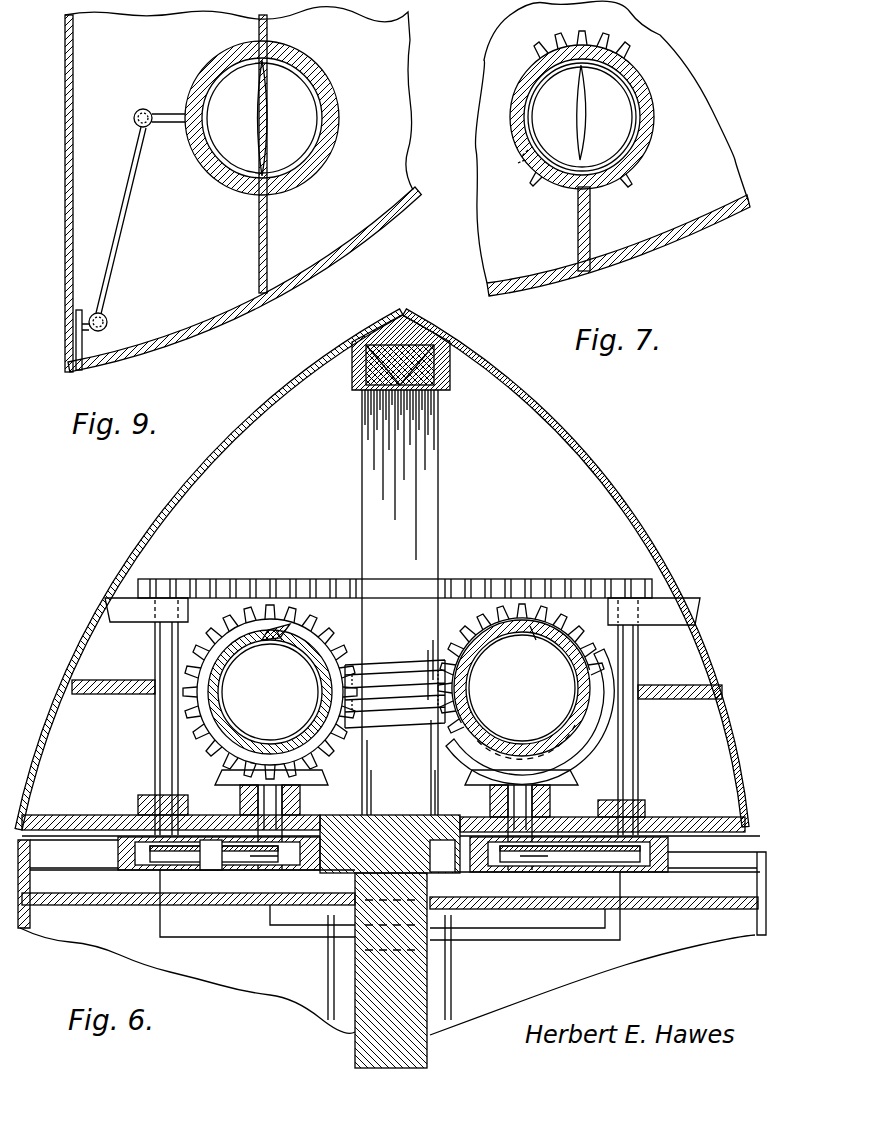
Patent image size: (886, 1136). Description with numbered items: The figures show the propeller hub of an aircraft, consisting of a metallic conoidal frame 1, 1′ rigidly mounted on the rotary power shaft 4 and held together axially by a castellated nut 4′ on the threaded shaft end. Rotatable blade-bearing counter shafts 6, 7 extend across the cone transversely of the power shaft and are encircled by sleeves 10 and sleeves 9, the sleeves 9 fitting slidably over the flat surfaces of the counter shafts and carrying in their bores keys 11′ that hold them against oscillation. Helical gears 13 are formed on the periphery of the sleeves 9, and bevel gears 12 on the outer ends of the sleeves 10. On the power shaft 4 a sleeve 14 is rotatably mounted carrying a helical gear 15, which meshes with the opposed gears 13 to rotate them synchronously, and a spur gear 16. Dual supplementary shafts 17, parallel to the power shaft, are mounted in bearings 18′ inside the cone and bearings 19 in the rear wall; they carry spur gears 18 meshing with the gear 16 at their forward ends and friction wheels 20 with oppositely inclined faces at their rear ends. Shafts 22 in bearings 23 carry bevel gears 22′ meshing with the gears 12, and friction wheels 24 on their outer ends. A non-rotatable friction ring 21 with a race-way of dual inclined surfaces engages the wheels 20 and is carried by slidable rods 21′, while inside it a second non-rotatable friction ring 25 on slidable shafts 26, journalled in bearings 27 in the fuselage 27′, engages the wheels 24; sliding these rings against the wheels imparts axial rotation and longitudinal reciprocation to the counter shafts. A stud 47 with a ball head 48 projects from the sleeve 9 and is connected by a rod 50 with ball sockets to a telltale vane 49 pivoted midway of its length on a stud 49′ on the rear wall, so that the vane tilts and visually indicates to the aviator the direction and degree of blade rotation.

In FIG. 9, the propeller-supporting frame section 1 is at (73, 200).
In FIG. 7, the propeller-supporting frame section 1 is at (552, 266).
In FIG. 6, the propeller-supporting frame section 1 is at (698, 832).
In FIG. 9, the front frame section 1′ is at (338, 250).
In FIG. 7, the front frame section 1′ is at (668, 250).
In FIG. 6, the front frame section 1′ is at (449, 366).
In FIG. 6, the power shaft 4 is at (380, 392).
In FIG. 6, the nut 4′ is at (366, 342).
In FIG. 9, the blade-bearing counter shaft 6 is at (208, 119).
In FIG. 7, the blade-bearing counter shaft 6 is at (635, 119).
In FIG. 6, the blade-bearing counter shaft 6 is at (470, 700).
In FIG. 6, the blade-bearing counter shaft 7 is at (216, 688).
In FIG. 9, the sleeve 9 is at (337, 121).
In FIG. 7, the sleeve 9 is at (655, 127).
In FIG. 6, the sleeve 9 is at (522, 688).
In FIG. 6, the sleeve 10 is at (250, 648).
In FIG. 6, the key 11′ is at (279, 644).
In FIG. 6, the bevel gear 12 is at (312, 648).
In FIG. 7, the helical gear 13 is at (536, 47).
In FIG. 6, the helical gear 13 is at (562, 638).
In FIG. 6, the sleeve 14 is at (397, 635).
In FIG. 6, the helical gear 15 is at (395, 694).
In FIG. 6, the spur gear 16 is at (330, 580).
In FIG. 6, the supplementary shaft 17 is at (152, 724).
In FIG. 6, the spur gear 18 is at (180, 579).
In FIG. 6, the bearing 18′ is at (150, 616).
In FIG. 6, the bearing 19 is at (136, 808).
In FIG. 6, the friction wheel 20 is at (644, 882).
In FIG. 6, the friction ring 21 is at (118, 857).
In FIG. 6, the slidable rod 21′ is at (160, 888).
In FIG. 6, the shaft 22 is at (290, 810).
In FIG. 6, the bevel gear 22′ is at (220, 779).
In FIG. 6, the bearing 23 is at (240, 806).
In FIG. 6, the friction wheel 24 is at (268, 858).
In FIG. 6, the friction ring 25 is at (395, 876).
In FIG. 6, the slidable shaft 26 is at (330, 872).
In FIG. 6, the bearing 27 is at (417, 962).
In FIG. 6, the fuselage 27′ is at (376, 891).
In FIG. 9, the stud 47 is at (173, 124).
In FIG. 9, the ball head 48 is at (146, 109).
In FIG. 9, the vane 49 is at (86, 318).
In FIG. 9, the stud 49′ is at (74, 322).
In FIG. 9, the rod 50 is at (135, 118).